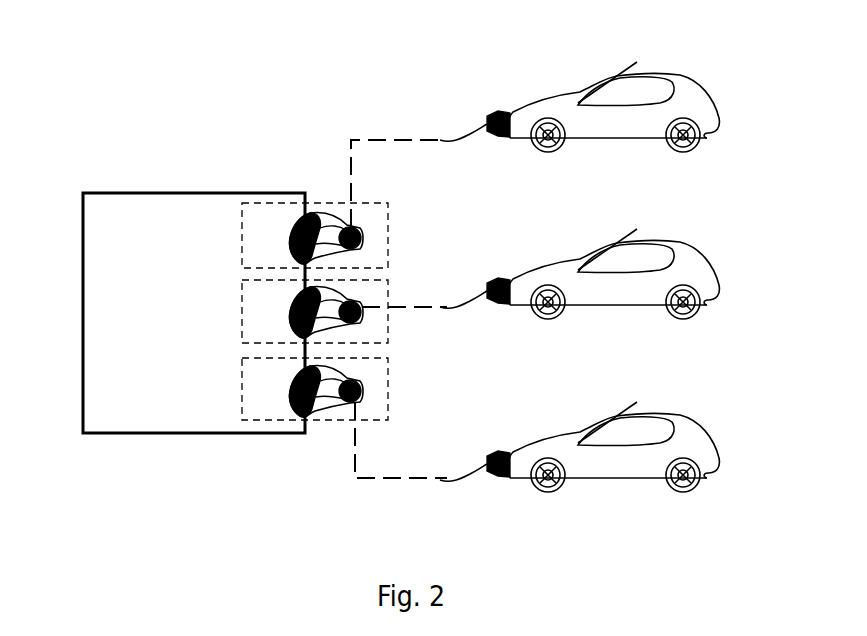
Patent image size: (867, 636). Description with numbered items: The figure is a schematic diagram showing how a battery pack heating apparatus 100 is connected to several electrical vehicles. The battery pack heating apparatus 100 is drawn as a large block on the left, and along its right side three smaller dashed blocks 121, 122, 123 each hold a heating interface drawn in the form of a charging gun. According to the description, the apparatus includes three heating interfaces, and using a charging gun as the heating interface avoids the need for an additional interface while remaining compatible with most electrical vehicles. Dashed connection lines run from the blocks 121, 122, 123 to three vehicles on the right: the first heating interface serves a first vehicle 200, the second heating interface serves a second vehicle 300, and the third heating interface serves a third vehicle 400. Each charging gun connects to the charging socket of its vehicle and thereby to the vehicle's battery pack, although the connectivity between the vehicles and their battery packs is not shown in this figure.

The battery pack heating apparatus 100 is at (194, 313).
The first charging connector 121 is at (315, 235).
The second charging connector 122 is at (315, 311).
The third charging connector 123 is at (315, 389).
The first vehicle 200 is at (579, 95).
The second vehicle 300 is at (579, 264).
The third vehicle 400 is at (579, 442).